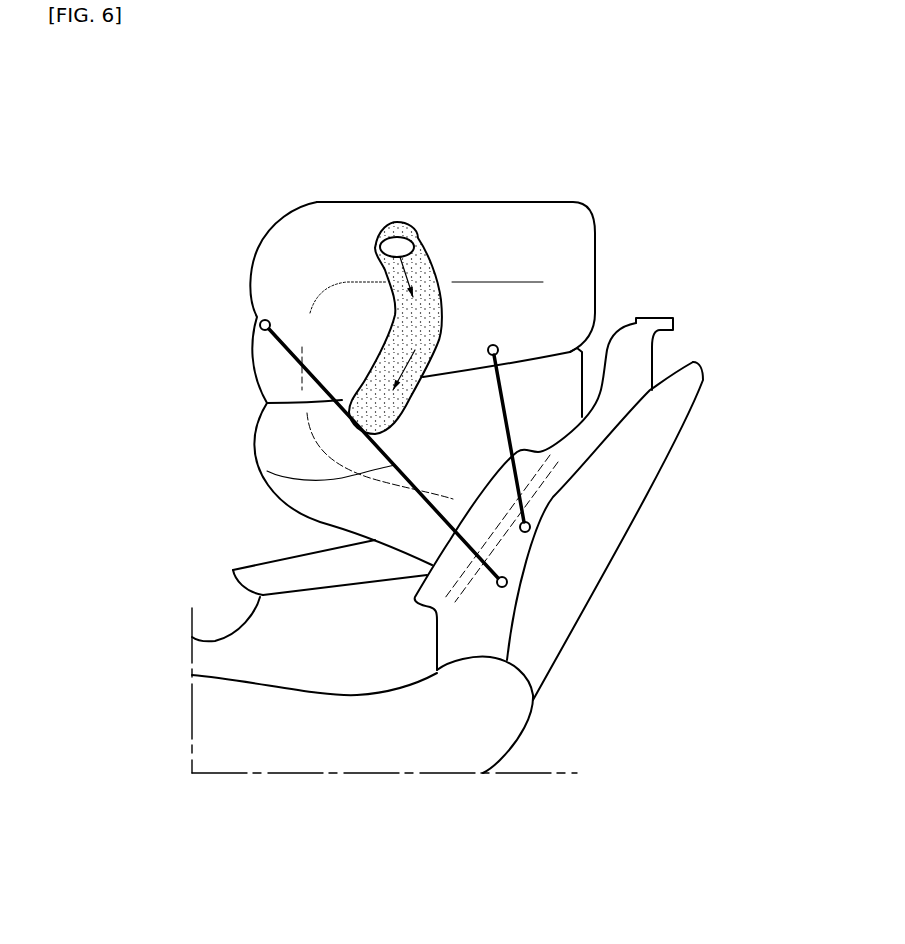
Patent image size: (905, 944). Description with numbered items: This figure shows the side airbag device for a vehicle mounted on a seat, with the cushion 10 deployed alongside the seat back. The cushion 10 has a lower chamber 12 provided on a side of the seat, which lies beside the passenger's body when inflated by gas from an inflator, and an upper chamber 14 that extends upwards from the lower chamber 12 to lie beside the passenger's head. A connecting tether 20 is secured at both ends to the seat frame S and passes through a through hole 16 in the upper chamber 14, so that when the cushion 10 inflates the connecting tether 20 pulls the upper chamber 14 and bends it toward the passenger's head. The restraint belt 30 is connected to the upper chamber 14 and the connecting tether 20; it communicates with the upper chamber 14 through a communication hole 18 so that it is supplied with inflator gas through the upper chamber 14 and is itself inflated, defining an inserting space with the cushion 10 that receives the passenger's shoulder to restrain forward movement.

The cushion 10 is at (228, 405).
The lower chamber 12 is at (565, 398).
The upper chamber 14 is at (468, 237).
The through hole 16 is at (493, 345).
The communication hole 18 is at (405, 240).
The connecting tether 20 is at (267, 471).
The restraint belt 30 is at (393, 312).
The seat frame S is at (578, 452).